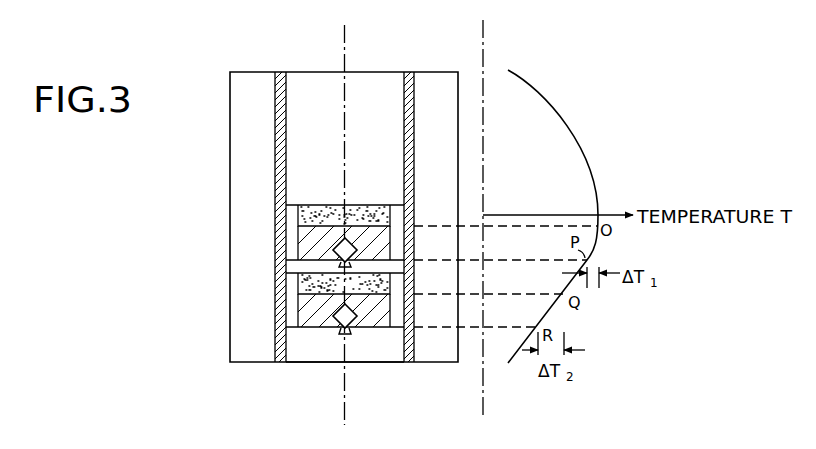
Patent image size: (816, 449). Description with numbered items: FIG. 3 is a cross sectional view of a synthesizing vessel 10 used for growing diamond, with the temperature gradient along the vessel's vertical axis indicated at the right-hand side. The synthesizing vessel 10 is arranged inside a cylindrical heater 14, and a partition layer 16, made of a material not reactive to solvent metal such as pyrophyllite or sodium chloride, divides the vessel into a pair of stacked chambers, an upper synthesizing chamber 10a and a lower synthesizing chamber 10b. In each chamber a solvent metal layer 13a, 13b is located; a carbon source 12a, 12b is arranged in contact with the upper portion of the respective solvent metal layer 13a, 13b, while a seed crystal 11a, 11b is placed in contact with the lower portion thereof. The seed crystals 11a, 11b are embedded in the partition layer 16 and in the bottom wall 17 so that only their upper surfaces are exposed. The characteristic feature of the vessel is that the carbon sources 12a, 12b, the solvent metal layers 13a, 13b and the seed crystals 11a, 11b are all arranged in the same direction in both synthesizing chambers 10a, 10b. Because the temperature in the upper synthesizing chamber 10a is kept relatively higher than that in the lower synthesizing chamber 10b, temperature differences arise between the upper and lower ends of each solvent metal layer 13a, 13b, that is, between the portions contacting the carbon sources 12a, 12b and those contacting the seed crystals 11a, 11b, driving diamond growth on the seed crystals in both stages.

The synthesizing vessel 10 is at (369, 193).
The upper synthesizing chamber 10a is at (298, 227).
The lower synthesizing chamber 10b is at (303, 298).
The seed crystal 11a is at (342, 266).
The seed crystal 11b is at (342, 334).
The carbon source 12a is at (298, 206).
The carbon source 12b is at (298, 283).
The solvent metal layer 13a is at (305, 245).
The solvent metal layer 13b is at (277, 347).
The cylindrical heater 14 is at (413, 340).
The partition layer 16 is at (392, 266).
The bottom wall 17 is at (377, 350).